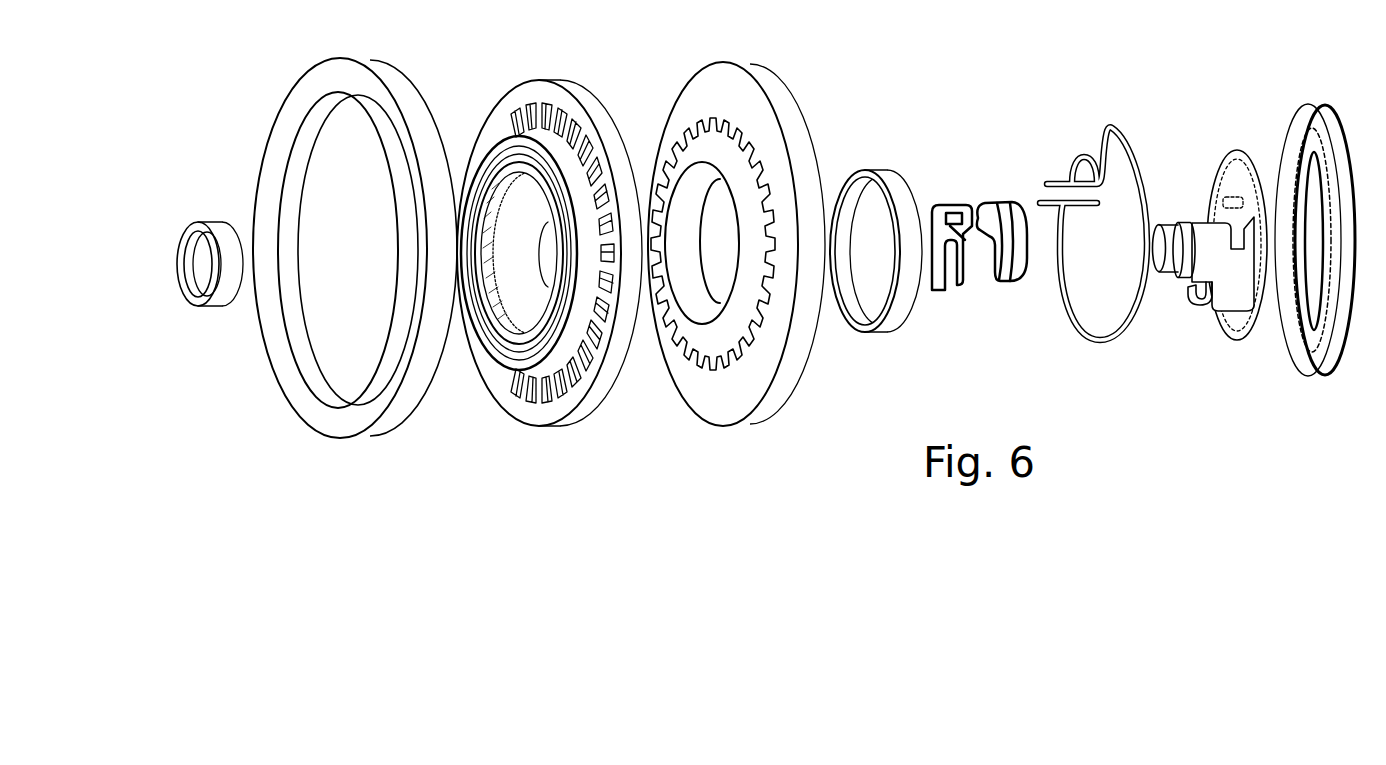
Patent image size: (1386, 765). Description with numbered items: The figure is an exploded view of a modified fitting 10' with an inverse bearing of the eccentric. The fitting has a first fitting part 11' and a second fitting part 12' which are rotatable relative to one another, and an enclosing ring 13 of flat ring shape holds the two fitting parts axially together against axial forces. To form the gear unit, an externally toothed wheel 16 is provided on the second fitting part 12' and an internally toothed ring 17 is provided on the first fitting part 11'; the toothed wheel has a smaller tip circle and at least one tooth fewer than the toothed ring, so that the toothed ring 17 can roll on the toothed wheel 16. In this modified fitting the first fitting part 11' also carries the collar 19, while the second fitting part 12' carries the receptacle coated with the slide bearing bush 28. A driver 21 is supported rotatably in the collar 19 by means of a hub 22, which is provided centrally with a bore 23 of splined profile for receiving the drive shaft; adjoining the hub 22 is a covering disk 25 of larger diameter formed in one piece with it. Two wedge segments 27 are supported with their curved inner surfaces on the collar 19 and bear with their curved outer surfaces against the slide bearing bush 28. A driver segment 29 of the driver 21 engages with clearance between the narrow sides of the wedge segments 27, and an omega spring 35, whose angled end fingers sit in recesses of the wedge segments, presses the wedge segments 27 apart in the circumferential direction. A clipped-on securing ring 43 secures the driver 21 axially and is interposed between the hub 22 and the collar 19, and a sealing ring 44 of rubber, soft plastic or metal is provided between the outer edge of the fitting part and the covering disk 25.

The modified fitting 10' is at (766, 228).
The first fitting part 11' is at (545, 228).
The second fitting part 12' is at (741, 244).
The enclosing ring 13 is at (330, 415).
The toothed wheel 16 is at (715, 118).
The toothed ring 17 is at (520, 97).
The collar 19 is at (537, 252).
The driver 21 is at (1235, 337).
The hub 22 is at (1203, 243).
The bore 23 is at (1160, 253).
The covering disk 25 is at (1236, 158).
The wedge segments 27 is at (1002, 205).
The slide bearing bush 28 is at (853, 212).
The driver segment 29 is at (1235, 285).
The omega spring 35 is at (1090, 338).
The securing ring 43 is at (225, 295).
The sealing ring 44 is at (1313, 347).